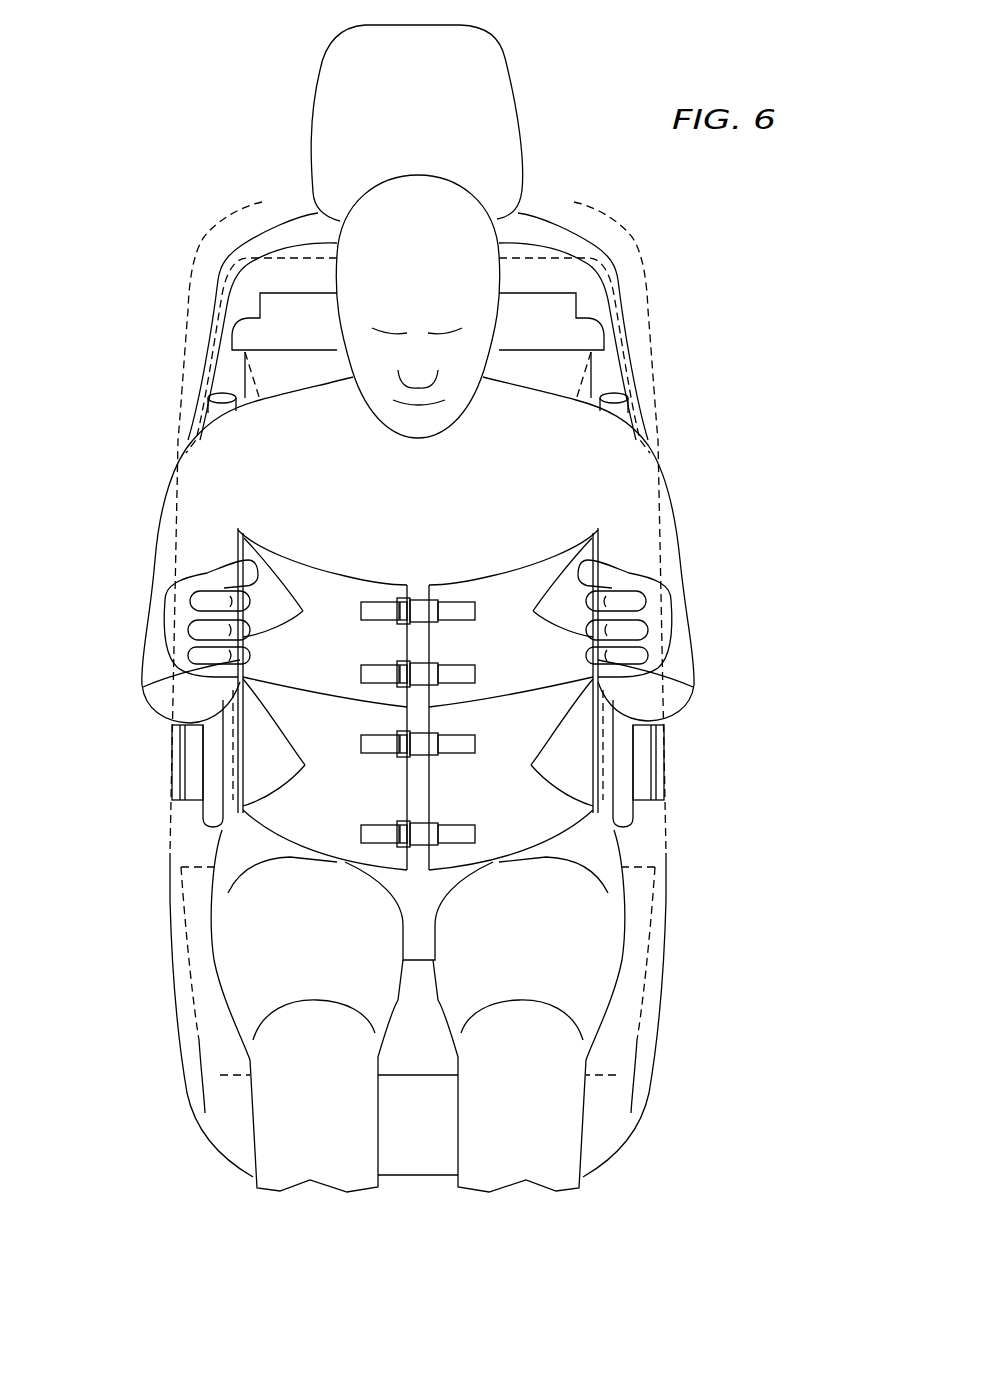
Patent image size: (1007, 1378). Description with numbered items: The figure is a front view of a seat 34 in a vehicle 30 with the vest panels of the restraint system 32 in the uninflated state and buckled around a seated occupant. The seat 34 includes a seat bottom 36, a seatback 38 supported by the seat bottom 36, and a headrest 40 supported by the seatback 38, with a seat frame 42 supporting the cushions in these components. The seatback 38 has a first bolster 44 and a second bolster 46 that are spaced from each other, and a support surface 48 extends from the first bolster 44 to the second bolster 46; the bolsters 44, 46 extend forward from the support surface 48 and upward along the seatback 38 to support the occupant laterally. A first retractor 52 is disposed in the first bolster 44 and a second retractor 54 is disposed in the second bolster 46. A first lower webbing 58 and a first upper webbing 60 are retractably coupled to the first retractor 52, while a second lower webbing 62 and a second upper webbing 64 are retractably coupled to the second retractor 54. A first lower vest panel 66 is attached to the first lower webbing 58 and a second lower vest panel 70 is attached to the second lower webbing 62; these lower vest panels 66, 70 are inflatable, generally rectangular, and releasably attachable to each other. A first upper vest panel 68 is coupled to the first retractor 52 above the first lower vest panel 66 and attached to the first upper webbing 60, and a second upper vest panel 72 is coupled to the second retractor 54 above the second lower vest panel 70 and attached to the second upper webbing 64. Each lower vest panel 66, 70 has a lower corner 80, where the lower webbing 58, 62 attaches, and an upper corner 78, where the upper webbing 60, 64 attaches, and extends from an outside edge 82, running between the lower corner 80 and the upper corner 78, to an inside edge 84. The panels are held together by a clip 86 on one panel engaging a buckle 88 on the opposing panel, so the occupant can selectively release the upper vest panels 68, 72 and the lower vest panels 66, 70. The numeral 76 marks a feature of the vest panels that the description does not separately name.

The vehicle 30 is at (130, 74).
The restraint system 32 is at (750, 727).
The seat 34 is at (262, 200).
The seat bottom 36 is at (178, 1044).
The seatback 38 is at (195, 278).
The headrest 40 is at (315, 85).
The seat frame 42 is at (170, 773).
The first bolster 44 is at (235, 345).
The second bolster 46 is at (622, 343).
The support surface 48 is at (548, 340).
The first retractor 52 is at (212, 392).
The second retractor 54 is at (626, 392).
The first lower webbing 58 is at (190, 740).
The first upper webbing 60 is at (238, 553).
The second lower webbing 62 is at (645, 740).
The second upper webbing 64 is at (598, 553).
The first lower vest panel 66 is at (270, 845).
The first upper vest panel 68 is at (325, 565).
The second lower vest panel 70 is at (566, 845).
The second upper vest panel 72 is at (530, 565).
The hand flap 76 is at (303, 611).
The upper corner 78 is at (268, 540).
The lower corner 80 is at (237, 660).
The outside edge 82 is at (248, 601).
The inside edge 84 is at (424, 640).
The clip 86 is at (404, 662).
The buckle 88 is at (440, 672).